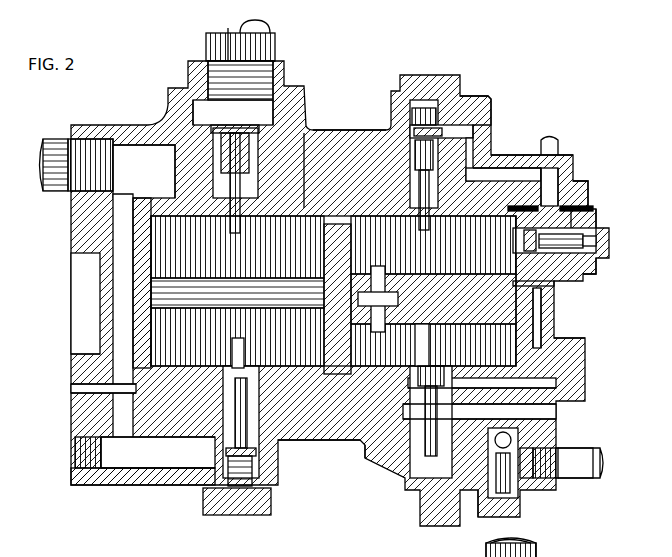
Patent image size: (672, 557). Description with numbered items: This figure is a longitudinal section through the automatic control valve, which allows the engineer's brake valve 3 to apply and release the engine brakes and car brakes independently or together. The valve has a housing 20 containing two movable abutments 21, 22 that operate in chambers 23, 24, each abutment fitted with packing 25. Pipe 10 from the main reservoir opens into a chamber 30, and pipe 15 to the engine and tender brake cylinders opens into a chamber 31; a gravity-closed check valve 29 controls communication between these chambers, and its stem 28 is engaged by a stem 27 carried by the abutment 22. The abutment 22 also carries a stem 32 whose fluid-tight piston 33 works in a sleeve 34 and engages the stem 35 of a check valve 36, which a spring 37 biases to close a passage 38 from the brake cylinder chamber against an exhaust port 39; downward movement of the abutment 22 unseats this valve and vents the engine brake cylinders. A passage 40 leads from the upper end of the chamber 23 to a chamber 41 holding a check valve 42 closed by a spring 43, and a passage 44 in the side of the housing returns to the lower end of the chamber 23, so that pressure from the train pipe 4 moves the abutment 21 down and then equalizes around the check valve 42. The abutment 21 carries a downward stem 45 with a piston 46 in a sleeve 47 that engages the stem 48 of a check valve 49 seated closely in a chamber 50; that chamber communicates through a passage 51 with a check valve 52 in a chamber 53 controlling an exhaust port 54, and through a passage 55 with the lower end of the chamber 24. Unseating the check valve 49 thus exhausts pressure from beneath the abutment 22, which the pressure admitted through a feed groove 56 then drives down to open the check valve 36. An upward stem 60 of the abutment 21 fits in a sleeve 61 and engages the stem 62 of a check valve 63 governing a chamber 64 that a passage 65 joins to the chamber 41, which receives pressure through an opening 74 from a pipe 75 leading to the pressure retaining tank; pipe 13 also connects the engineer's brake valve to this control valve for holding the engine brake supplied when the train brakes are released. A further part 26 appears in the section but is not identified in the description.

The pipe 10 is at (200, 43).
The train pipe 4 is at (228, 540).
The engineer's brake valve 3 is at (422, 68).
The pipe 13 is at (582, 458).
The pipe 15 is at (45, 133).
The housing 20 is at (326, 126).
The movable abutment 21 is at (548, 302).
The movable abutment 22 is at (145, 278).
The chamber 23 is at (348, 205).
The chamber 24 is at (165, 248).
The packing 25 is at (150, 315).
The second rotor 26 is at (412, 240).
The stem 27 is at (297, 175).
The stem 28 is at (212, 172).
The check valve 29 is at (235, 121).
The chamber 30 is at (233, 112).
The chamber 31 is at (144, 163).
The stem 32 is at (120, 353).
The fluid-tight piston 33 is at (100, 381).
The sleeve 34 is at (243, 352).
The stem 35 is at (262, 432).
The check valve 36 is at (214, 446).
The spring 37 is at (252, 460).
The passage 38 is at (108, 313).
The exhaust port 39 is at (145, 452).
The passage 40 is at (528, 200).
The chamber 41 is at (592, 260).
The check valve 42 is at (582, 178).
The spring 43 is at (580, 210).
The passage 44 is at (540, 322).
The stem 45 is at (580, 340).
The piston 46 is at (579, 380).
The sleeve 47 is at (408, 354).
The stem 48 is at (347, 462).
The check valve 49 is at (380, 462).
The chamber 50 is at (412, 442).
The passage 51 is at (520, 405).
The check valve 52 is at (510, 470).
The chamber 53 is at (468, 500).
The exhaust port 54 is at (505, 434).
The passage 55 is at (340, 418).
The feed groove 56 is at (170, 190).
The stem 60 is at (432, 232).
The sleeve 61 is at (410, 198).
The stem 62 is at (408, 168).
The check valve 63 is at (406, 143).
The chamber 64 is at (458, 100).
The passage 65 is at (495, 160).
The opening 74 is at (605, 240).
The pipe 75 is at (552, 140).